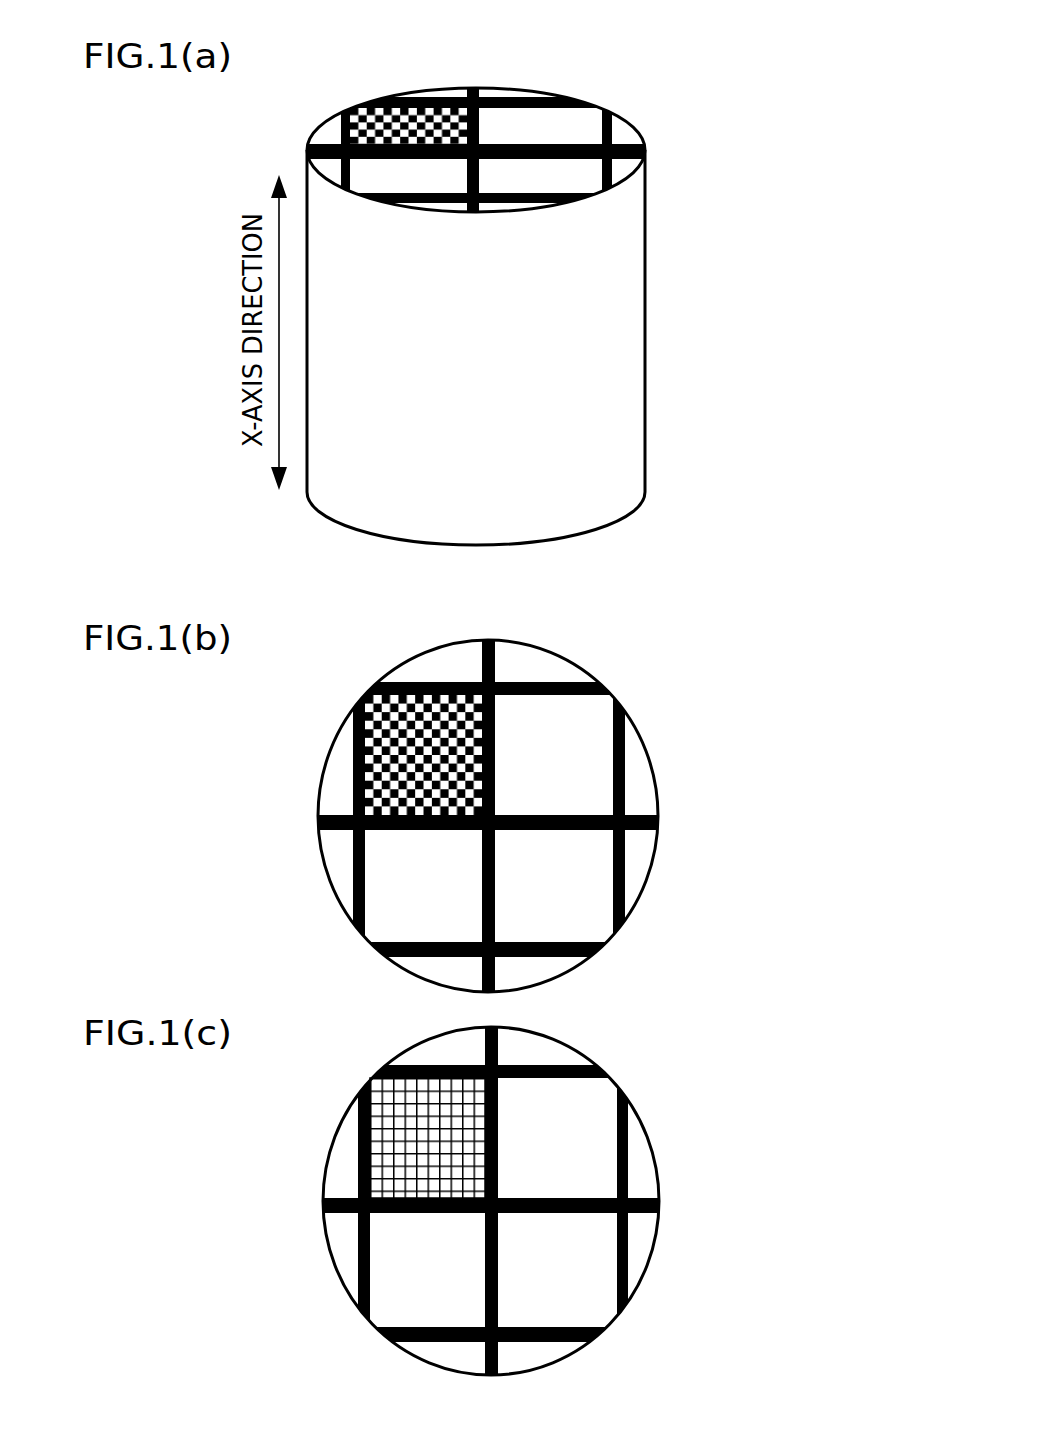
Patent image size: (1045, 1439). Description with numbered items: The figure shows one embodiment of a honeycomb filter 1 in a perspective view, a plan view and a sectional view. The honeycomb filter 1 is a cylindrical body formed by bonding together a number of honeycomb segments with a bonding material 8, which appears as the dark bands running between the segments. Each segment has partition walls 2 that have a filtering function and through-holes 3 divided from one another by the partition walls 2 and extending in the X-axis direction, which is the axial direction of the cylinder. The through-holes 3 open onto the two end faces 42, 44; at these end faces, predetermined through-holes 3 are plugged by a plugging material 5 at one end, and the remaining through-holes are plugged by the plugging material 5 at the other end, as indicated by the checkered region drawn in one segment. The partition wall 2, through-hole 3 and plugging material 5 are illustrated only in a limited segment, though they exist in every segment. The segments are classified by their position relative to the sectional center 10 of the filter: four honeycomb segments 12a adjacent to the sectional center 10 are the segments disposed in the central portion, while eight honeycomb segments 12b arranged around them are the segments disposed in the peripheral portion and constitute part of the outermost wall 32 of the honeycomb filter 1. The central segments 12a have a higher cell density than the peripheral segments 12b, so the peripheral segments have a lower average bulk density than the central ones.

In FIG. 1A, the honeycomb filter 1 is at (535, 276).
In FIG. 1B, the honeycomb filter 1 is at (543, 785).
In FIG. 1C, the honeycomb filter 1 is at (529, 1201).
In FIG. 1C, the partition wall 2 is at (398, 1158).
In FIG. 1C, the through-hole 3 is at (390, 1158).
In FIG. 1A, the plugging material 5 is at (438, 102).
In FIG. 1B, the plugging material 5 is at (417, 737).
In FIG. 1A, the bonding material 8 is at (557, 158).
In FIG. 1B, the bonding material 8 is at (553, 827).
In FIG. 1C, the bonding material 8 is at (578, 1210).
In FIG. 1A, the sectional center of honeycomb filter 10 is at (476, 150).
In FIG. 1B, the sectional center of honeycomb filter 10 is at (495, 828).
In FIG. 1C, the sectional center of honeycomb filter 10 is at (500, 1213).
In FIG. 1A, the honeycomb segment disposed in the central portion 12a is at (552, 125).
In FIG. 1B, the honeycomb segment disposed in the central portion 12a is at (587, 763).
In FIG. 1C, the honeycomb segment disposed in the central portion 12a is at (577, 1180).
In FIG. 1A, the honeycomb segment disposed in the peripheral portion 12b is at (622, 135).
In FIG. 1B, the honeycomb segment disposed in the peripheral portion 12b is at (645, 807).
In FIG. 1C, the honeycomb segment disposed in the peripheral portion 12b is at (647, 1192).
In FIG. 1A, the outermost wall of honeycomb filter 32 is at (575, 312).
In FIG. 1A, the end face 42 is at (526, 130).
In FIG. 1A, the end face 44 is at (550, 540).